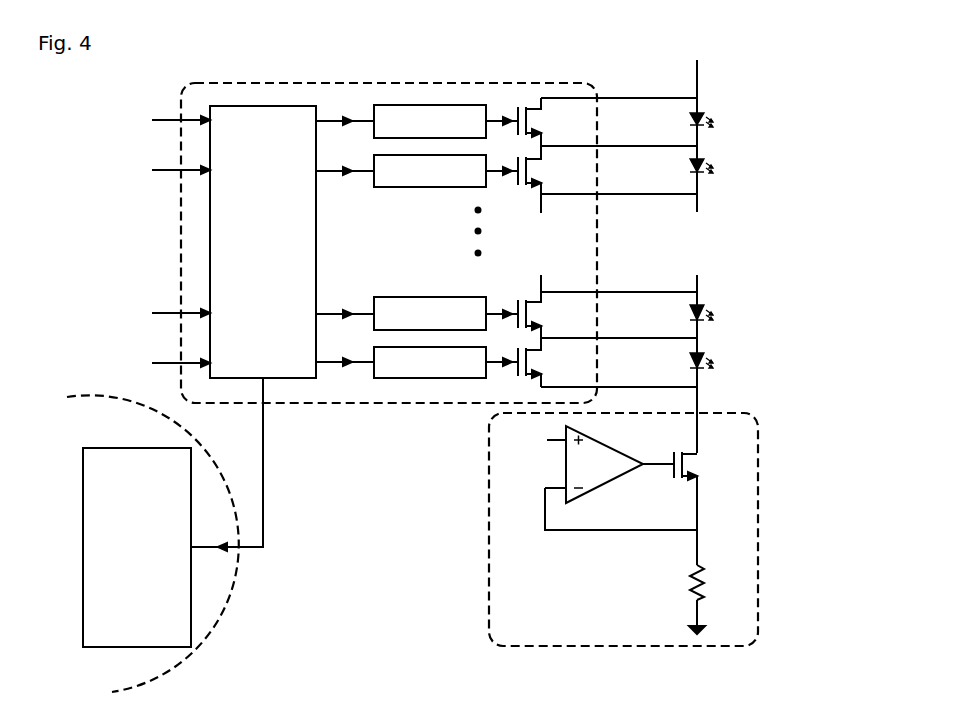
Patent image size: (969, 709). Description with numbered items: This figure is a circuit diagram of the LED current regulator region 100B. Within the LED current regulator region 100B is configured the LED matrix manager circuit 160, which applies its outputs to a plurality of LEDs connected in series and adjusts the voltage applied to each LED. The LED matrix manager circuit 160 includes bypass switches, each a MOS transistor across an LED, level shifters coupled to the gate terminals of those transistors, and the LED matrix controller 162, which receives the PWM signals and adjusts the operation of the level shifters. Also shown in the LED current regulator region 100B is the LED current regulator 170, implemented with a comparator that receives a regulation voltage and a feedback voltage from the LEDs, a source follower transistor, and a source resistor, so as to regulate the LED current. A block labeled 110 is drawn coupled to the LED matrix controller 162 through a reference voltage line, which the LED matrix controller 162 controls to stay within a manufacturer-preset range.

The LED current regulator region 100B is at (796, 83).
The LED matrix manager circuit 160 is at (580, 86).
The LED matrix controller 162 is at (263, 242).
The LED current regulator 170 is at (747, 414).
The buck-boost controller 110 is at (137, 547).